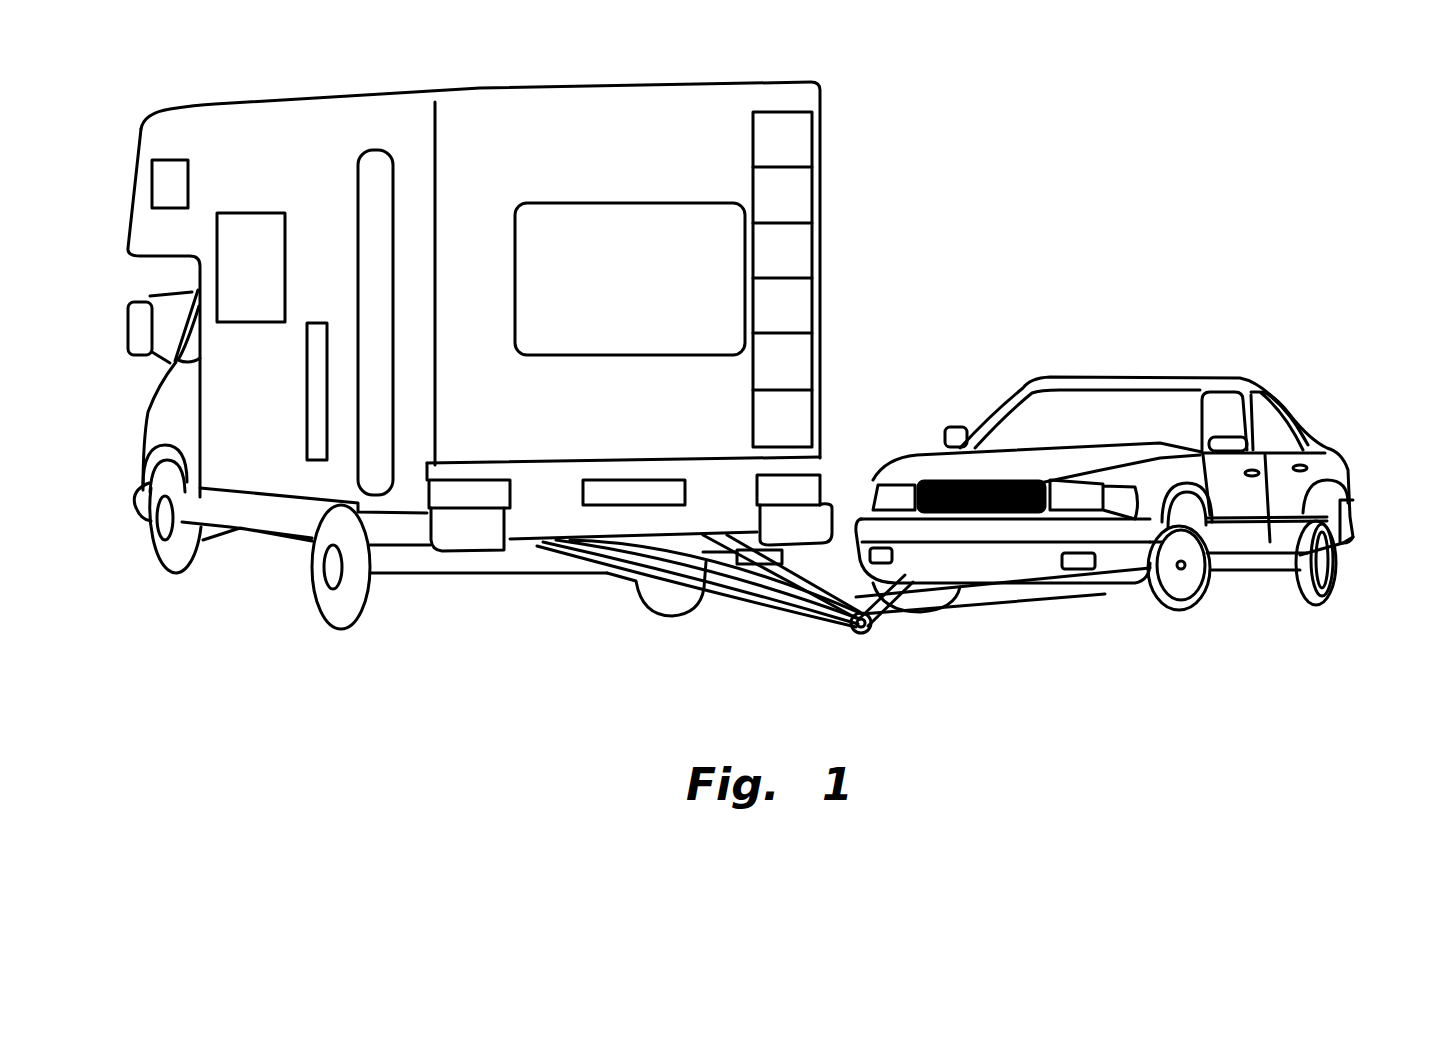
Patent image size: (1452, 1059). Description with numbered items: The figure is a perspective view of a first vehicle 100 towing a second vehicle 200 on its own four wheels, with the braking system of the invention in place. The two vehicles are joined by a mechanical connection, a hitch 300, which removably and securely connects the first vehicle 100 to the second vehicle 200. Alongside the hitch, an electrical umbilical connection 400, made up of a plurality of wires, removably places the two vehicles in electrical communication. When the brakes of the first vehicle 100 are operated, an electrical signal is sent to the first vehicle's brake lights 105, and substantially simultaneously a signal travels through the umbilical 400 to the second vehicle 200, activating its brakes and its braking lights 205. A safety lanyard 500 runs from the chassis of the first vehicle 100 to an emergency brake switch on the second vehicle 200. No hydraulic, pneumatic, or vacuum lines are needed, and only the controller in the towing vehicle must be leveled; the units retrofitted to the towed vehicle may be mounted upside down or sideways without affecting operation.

The first vehicle 100 is at (648, 406).
The brake lights 105 is at (488, 497).
The second vehicle 200 is at (1045, 474).
The braking lights 205 is at (1355, 516).
The hitch 300 is at (858, 634).
The electrical umbilical connection 400 is at (652, 612).
The safety lanyard 500 is at (720, 565).